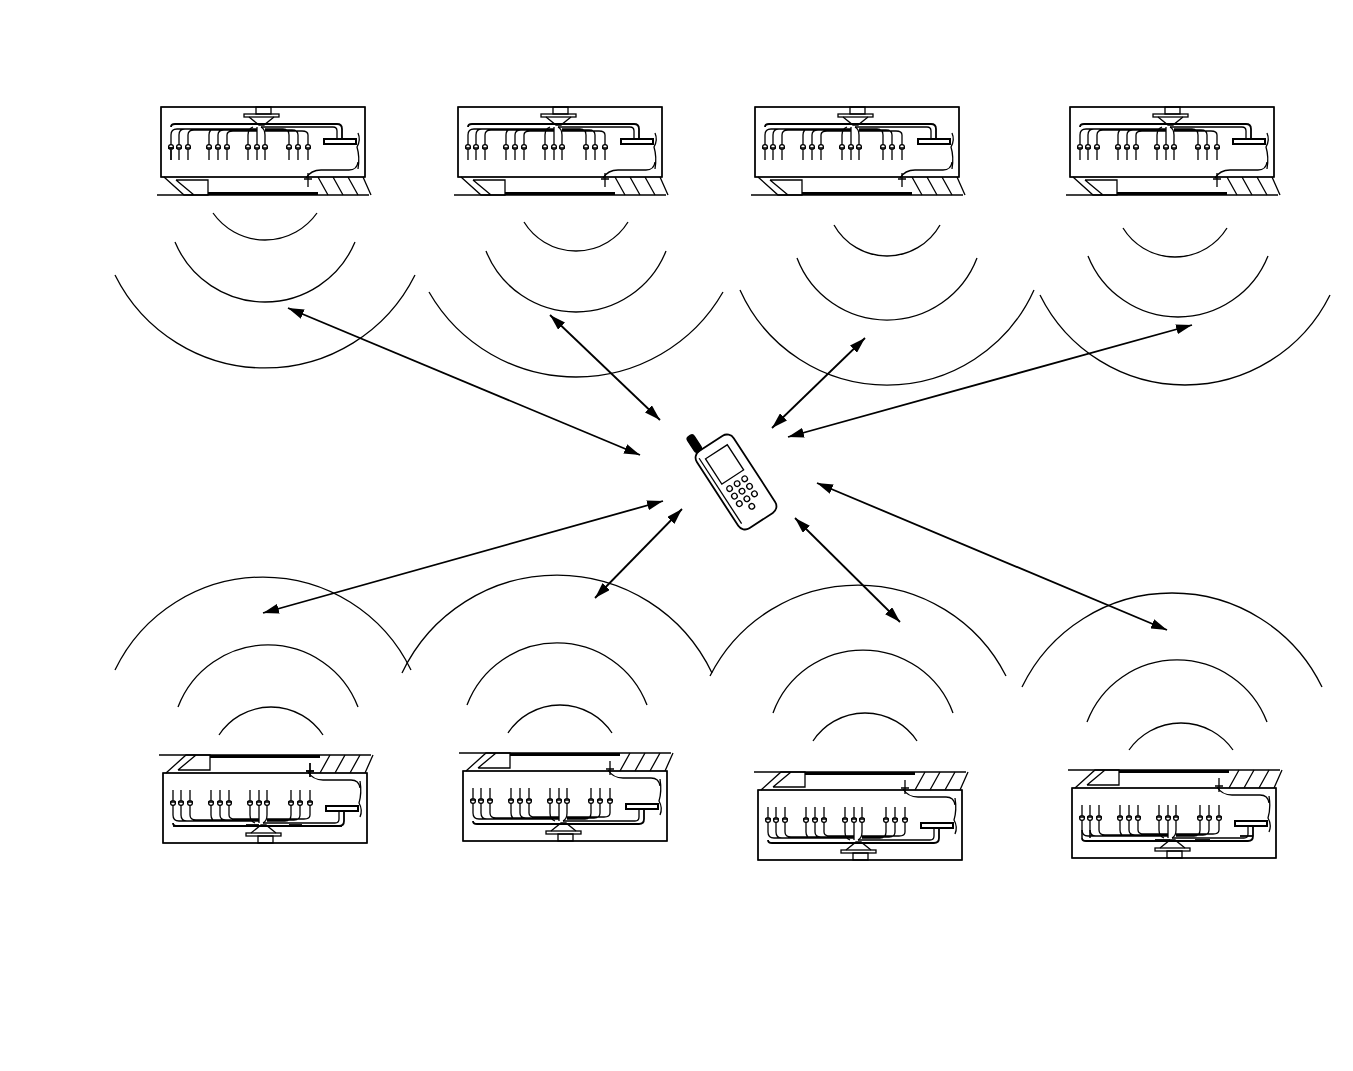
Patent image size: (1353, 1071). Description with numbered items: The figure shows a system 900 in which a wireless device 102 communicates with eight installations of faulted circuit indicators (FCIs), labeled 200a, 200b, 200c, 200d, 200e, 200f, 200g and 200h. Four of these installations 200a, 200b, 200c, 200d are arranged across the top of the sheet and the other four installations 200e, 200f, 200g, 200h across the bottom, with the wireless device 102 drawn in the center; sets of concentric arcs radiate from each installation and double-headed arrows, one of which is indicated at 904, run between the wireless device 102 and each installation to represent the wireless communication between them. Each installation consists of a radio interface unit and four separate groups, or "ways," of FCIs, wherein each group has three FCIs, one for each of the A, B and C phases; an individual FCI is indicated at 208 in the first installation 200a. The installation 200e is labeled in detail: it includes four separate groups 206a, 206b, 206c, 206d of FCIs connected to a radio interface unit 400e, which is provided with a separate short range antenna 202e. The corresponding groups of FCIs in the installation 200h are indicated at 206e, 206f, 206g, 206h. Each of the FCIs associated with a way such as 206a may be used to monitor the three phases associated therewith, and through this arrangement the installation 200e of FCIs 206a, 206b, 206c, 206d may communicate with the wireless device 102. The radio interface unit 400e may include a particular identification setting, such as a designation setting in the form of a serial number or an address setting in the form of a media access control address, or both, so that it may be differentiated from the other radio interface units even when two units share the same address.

The irrigation control system 900 is at (1338, 63).
The installation of FCIs 200a is at (179, 107).
The installation of FCIs 200b is at (518, 107).
The installation of FCIs 200c is at (788, 107).
The installation of FCIs 200d is at (1095, 107).
The installation of FCIs 200e is at (214, 843).
The installation of FCIs 200f is at (517, 841).
The installation of FCIs 200g is at (814, 860).
The installation of FCIs 200h is at (1126, 858).
The sprinkler head 208 is at (167, 156).
The short range antenna 202e is at (308, 768).
The group (way) of FCIs 206a is at (173, 827).
The group (way) of FCIs 206b is at (250, 828).
The group (way) of FCIs 206c is at (293, 827).
The group (way) of FCIs 206d is at (340, 817).
The valve 206e is at (1083, 830).
The valve 206f is at (1157, 845).
The valve 206g is at (1203, 840).
The valve 206h is at (1250, 832).
The radio interface unit 400e is at (366, 800).
The wireless device 102 is at (753, 526).
The wireless communication link 904 is at (863, 503).